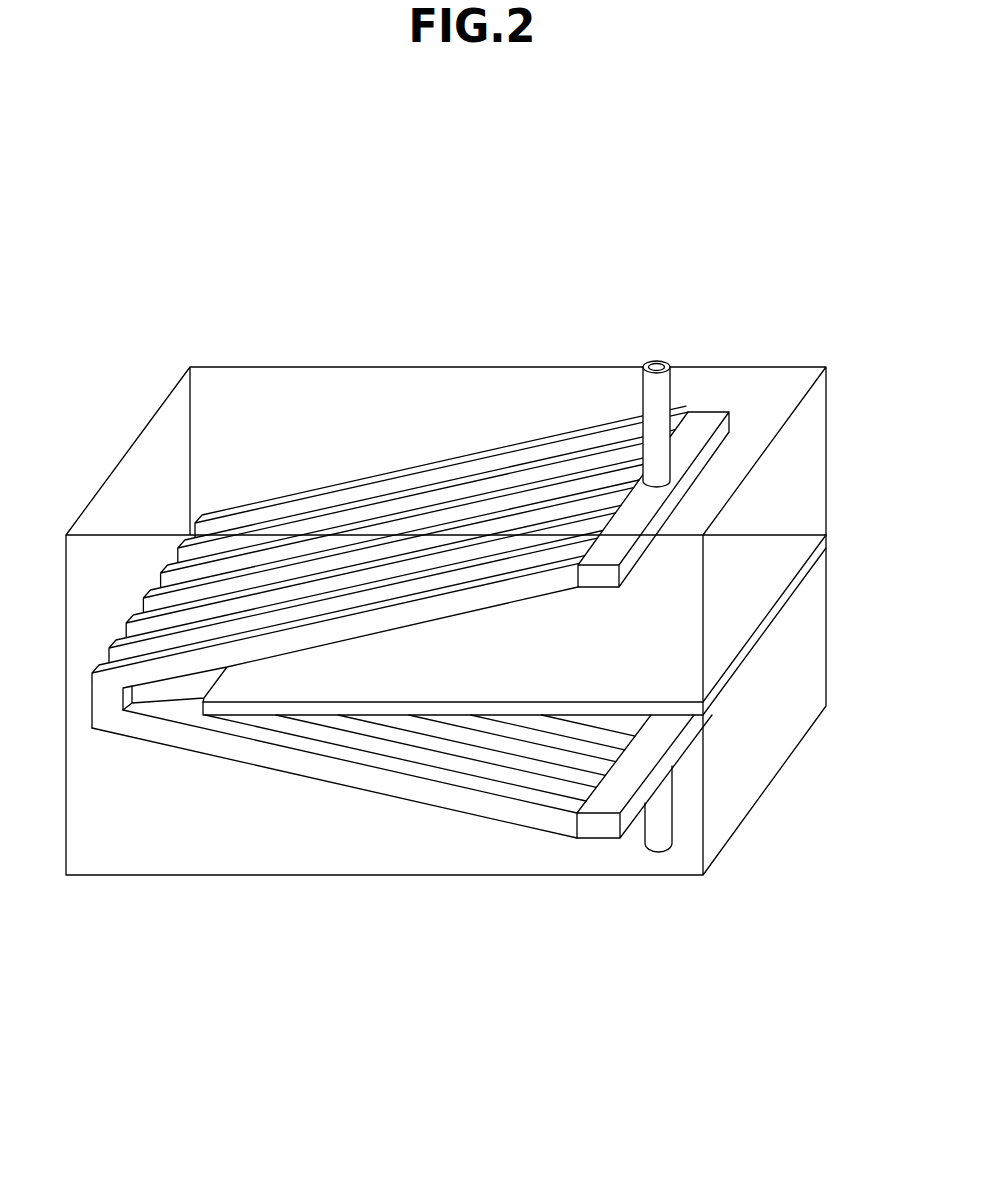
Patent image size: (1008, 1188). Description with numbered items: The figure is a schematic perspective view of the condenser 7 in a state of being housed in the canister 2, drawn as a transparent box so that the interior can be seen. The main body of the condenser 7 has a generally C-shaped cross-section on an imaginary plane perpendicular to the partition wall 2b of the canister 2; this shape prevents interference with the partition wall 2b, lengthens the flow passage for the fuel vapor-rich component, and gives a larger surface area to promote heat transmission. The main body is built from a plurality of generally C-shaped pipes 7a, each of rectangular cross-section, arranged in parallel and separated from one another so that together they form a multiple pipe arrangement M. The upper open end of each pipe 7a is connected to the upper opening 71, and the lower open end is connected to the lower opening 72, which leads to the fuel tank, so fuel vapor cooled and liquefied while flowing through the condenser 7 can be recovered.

The canister 2 is at (292, 368).
The partition wall 2b is at (747, 567).
The condenser 7 is at (453, 615).
The C-shaped pipe 7a is at (528, 443).
The upper opening 71 is at (665, 394).
The lower opening 72 is at (655, 823).
The multiple pipe arrangement M is at (263, 766).